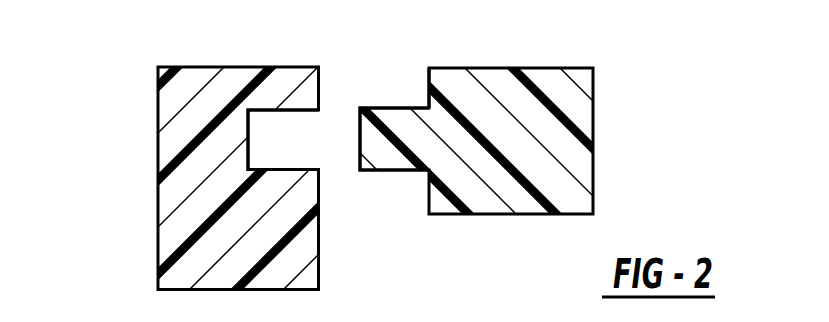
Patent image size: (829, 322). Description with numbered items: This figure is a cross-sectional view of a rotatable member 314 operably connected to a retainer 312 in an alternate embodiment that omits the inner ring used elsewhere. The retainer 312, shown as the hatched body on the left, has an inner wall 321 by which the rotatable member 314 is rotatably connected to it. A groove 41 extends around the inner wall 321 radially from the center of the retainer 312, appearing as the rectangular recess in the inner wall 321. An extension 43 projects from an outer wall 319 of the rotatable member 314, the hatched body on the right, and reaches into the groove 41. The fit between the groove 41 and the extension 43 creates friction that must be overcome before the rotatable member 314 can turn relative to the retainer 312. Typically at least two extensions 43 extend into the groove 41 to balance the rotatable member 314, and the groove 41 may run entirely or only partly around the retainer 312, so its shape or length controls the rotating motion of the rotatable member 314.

The retainer 312 is at (168, 222).
The rotatable member 314 is at (582, 165).
The outer wall 319 is at (429, 85).
The inner wall 321 is at (319, 245).
The groove 41 is at (292, 138).
The extension 43 is at (393, 172).